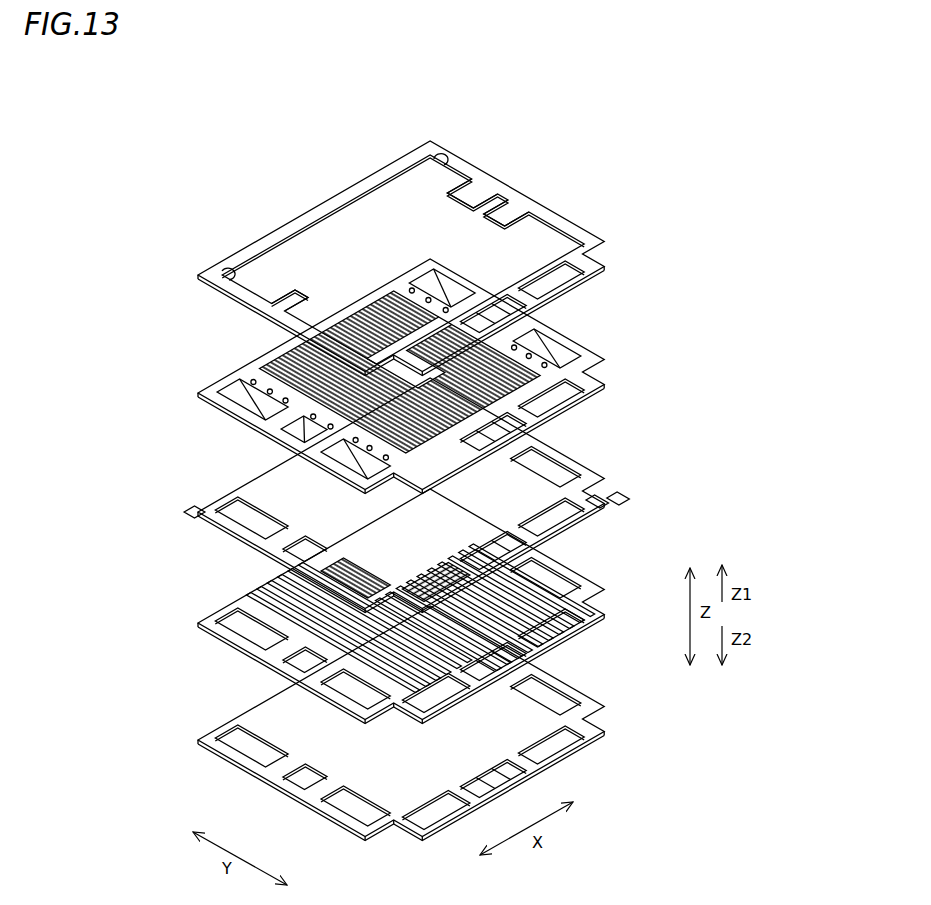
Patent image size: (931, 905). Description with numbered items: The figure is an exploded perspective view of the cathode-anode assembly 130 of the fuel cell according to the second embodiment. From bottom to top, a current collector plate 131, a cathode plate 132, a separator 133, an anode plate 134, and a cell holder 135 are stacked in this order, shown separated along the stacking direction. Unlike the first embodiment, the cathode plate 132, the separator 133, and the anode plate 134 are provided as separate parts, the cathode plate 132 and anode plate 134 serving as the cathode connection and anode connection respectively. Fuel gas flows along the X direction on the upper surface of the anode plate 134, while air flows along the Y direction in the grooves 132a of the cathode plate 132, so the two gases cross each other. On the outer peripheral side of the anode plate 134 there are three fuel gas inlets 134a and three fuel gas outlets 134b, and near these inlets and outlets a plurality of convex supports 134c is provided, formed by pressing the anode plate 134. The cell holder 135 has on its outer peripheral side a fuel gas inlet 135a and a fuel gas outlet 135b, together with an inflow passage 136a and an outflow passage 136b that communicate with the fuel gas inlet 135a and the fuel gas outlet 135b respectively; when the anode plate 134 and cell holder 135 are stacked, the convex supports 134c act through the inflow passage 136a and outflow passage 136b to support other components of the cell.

The cathode-anode assembly 130 is at (568, 112).
The current collector plate 131 is at (210, 735).
The cathode plate 132 is at (210, 620).
The grooves 132a is at (247, 592).
The separator 133 is at (214, 508).
The anode plate 134 is at (252, 372).
The fuel gas inlets 134a is at (243, 383).
The fuel gas outlets 134b is at (440, 282).
The convex supports 134c is at (606, 356).
The cell holder 135 is at (285, 222).
The fuel gas inlet 135a is at (224, 270).
The fuel gas outlet 135b is at (434, 157).
The inflow passage 136a is at (273, 283).
The outflow passage 136b is at (440, 181).